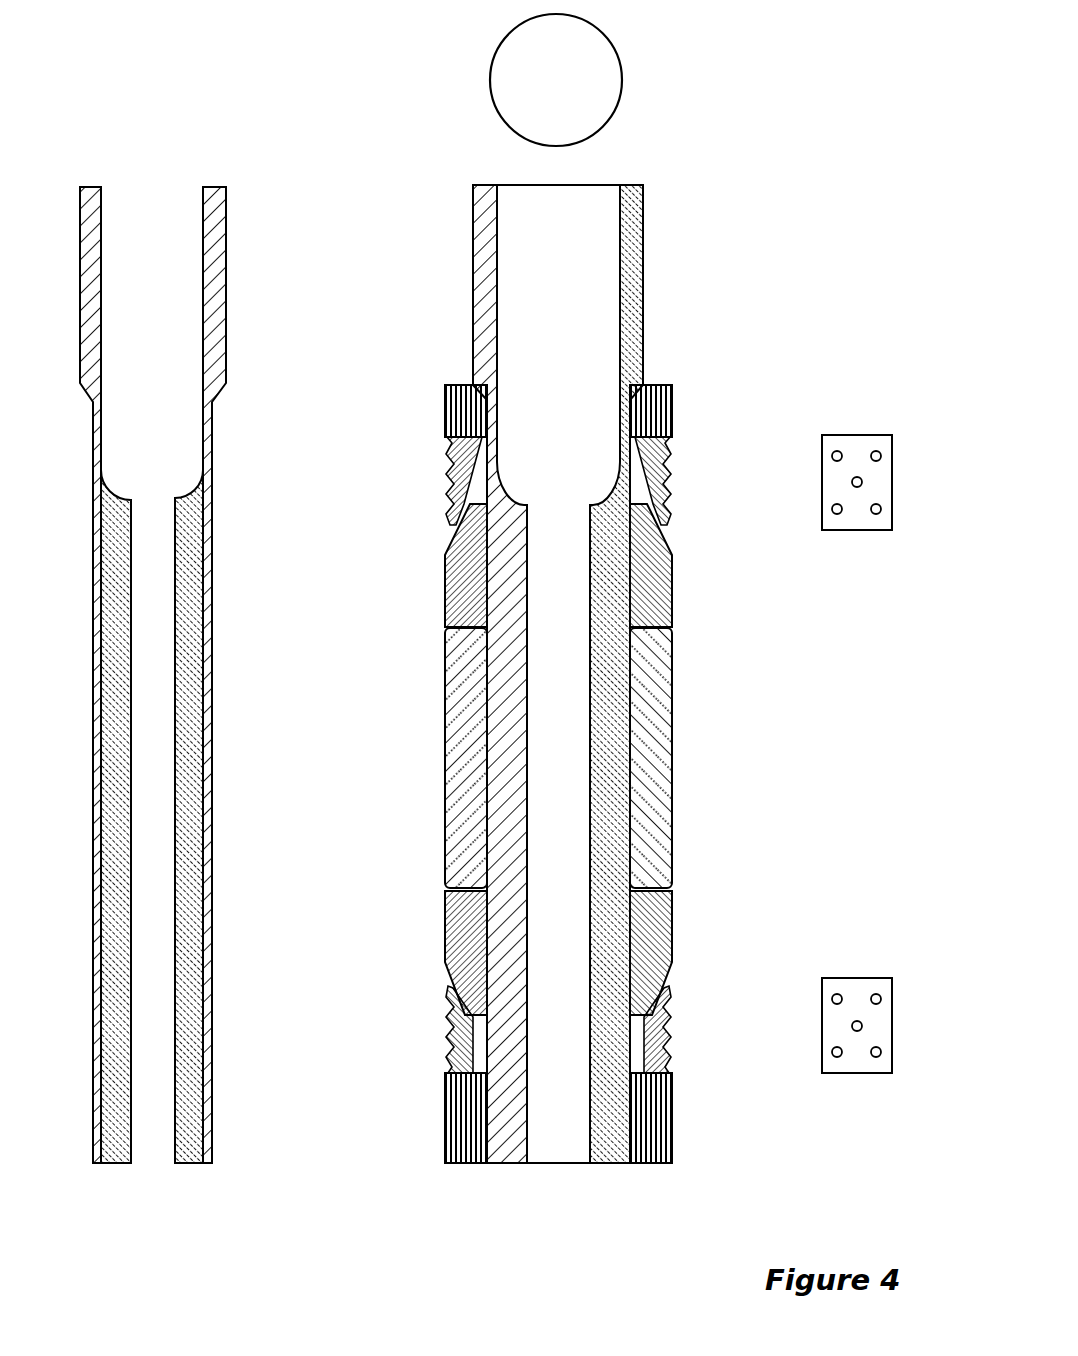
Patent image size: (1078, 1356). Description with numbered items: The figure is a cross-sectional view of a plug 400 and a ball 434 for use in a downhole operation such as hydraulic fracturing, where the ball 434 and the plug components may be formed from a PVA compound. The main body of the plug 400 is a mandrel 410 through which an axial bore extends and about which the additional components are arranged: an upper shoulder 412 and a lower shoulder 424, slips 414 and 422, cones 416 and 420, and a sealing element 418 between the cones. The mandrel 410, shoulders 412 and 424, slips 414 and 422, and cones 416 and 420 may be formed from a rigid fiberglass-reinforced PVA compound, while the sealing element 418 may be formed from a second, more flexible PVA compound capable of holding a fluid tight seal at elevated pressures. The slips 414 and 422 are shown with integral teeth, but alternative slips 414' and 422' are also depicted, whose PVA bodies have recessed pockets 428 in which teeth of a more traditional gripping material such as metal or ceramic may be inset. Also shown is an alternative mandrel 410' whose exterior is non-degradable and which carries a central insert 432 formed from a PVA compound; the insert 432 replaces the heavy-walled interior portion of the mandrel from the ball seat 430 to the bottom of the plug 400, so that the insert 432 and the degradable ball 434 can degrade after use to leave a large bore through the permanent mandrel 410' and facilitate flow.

The plug 400 is at (377, 270).
The mandrel 410 is at (584, 674).
The alternative mandrel 410' is at (125, 653).
The upper shoulder 412 is at (672, 412).
The slip 414 is at (598, 481).
The slip 414' is at (883, 463).
The cone 416 is at (672, 590).
The sealing element 418 is at (672, 757).
The cone 420 is at (672, 913).
The slip 422 is at (599, 1036).
The slip 422' is at (883, 1005).
The lower shoulder 424 is at (672, 1130).
The recessed pockets 428 is at (837, 514).
The ball seat 430 is at (187, 507).
The central insert 432 is at (118, 1165).
The ball 434 is at (623, 80).